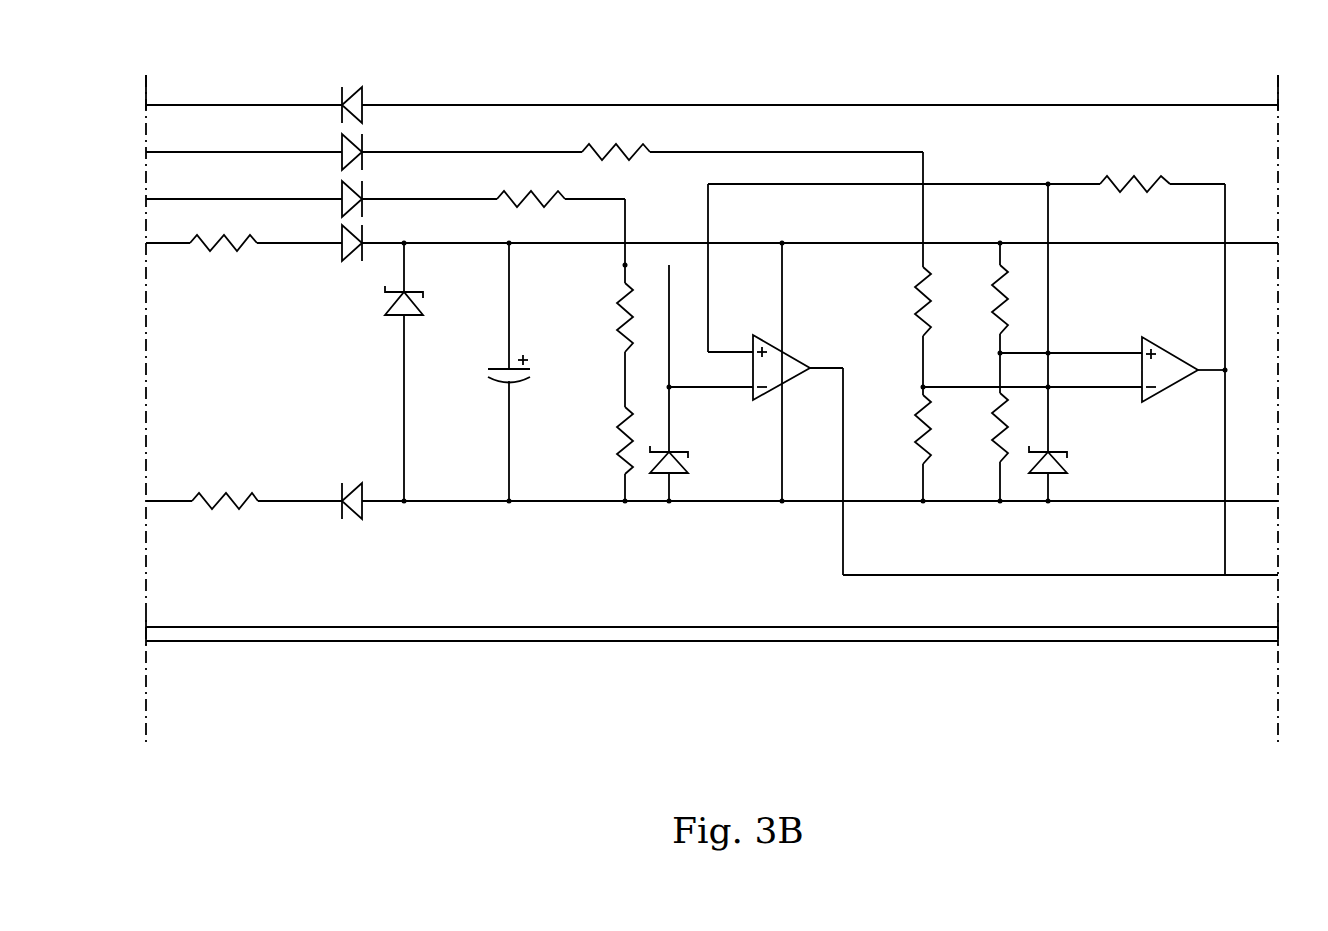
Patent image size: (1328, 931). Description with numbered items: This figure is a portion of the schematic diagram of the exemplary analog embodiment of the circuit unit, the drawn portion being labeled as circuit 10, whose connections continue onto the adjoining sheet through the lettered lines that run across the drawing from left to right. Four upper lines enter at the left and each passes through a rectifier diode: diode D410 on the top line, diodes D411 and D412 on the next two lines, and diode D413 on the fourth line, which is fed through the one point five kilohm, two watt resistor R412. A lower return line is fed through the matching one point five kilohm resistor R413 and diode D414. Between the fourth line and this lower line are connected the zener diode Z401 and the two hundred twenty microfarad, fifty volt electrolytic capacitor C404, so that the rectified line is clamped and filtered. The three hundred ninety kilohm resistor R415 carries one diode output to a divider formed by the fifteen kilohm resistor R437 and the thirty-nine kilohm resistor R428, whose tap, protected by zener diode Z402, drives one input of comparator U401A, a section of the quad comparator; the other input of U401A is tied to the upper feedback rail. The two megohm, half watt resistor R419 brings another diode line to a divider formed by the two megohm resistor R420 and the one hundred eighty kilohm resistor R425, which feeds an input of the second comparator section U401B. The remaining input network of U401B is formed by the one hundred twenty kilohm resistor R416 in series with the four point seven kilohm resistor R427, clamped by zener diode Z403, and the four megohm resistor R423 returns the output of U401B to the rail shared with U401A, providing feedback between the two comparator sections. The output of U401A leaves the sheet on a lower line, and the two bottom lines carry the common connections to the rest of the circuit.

The control circuit 10 is at (277, 403).
The diode D410 is at (319, 102).
The diode D411 is at (319, 149).
The diode D412 is at (319, 196).
The diode D413 is at (319, 241).
The diode D414 is at (343, 486).
The resistor R412 is at (220, 231).
The resistor R413 is at (220, 490).
The resistor R415 is at (531, 189).
The resistor R416 is at (991, 303).
The resistor R419 is at (616, 142).
The resistor R420 is at (893, 273).
The resistor R423 is at (1136, 174).
The resistor R425 is at (919, 467).
The resistor R427 is at (1003, 466).
The resistor R428 is at (591, 454).
The resistor R437 is at (591, 303).
The zener diode Z401 is at (370, 372).
The zener diode Z402 is at (702, 383).
The zener diode Z403 is at (1081, 444).
The capacitor C404 is at (476, 372).
The comparator U401A is at (858, 379).
The comparator U401B is at (1074, 379).